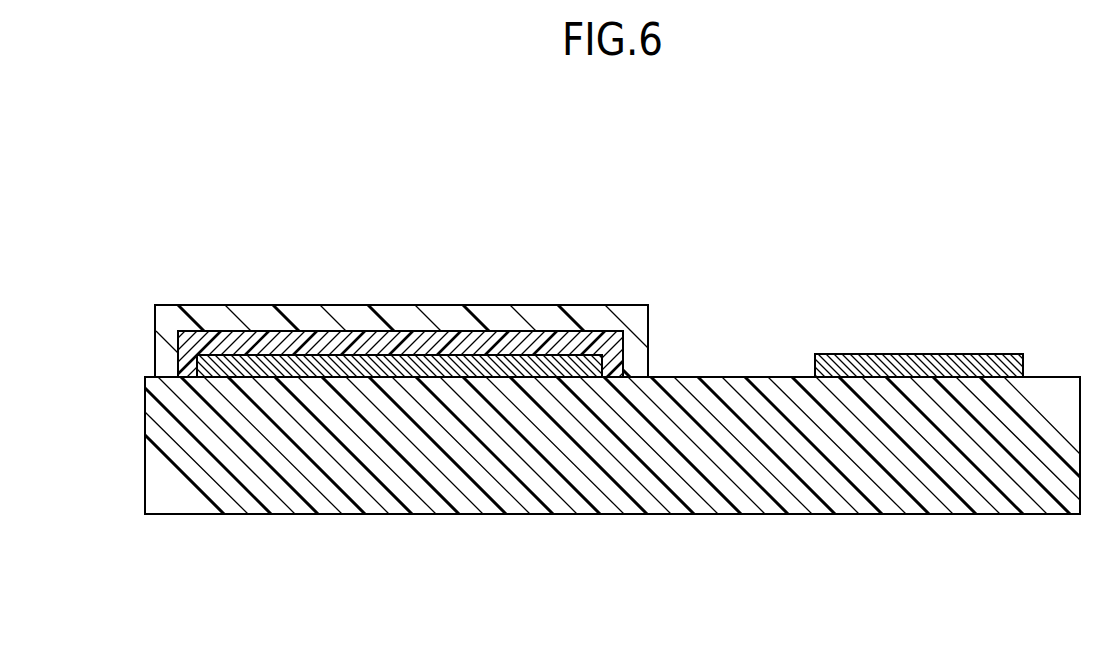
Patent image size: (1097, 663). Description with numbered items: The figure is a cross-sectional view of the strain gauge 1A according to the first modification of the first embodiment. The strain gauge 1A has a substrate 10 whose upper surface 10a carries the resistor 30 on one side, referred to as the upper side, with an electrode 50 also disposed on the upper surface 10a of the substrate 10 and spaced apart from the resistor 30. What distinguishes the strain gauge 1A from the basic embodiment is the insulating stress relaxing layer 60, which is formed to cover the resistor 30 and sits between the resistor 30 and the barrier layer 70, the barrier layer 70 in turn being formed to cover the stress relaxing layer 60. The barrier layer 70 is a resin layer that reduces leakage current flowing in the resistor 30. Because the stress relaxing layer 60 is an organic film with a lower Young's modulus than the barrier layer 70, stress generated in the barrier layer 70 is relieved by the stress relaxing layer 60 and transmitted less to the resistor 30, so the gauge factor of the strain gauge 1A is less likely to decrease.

The strain gauge 1A is at (105, 212).
The substrate 10 is at (610, 475).
The upper surface of the substrate 10a is at (1053, 377).
The resistor 30 is at (462, 365).
The electrode 50 is at (921, 363).
The stress relaxing layer 60 is at (250, 342).
The barrier layer 70 is at (333, 323).